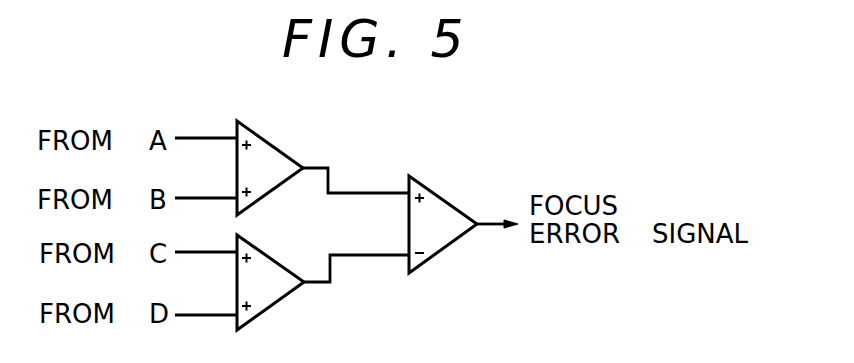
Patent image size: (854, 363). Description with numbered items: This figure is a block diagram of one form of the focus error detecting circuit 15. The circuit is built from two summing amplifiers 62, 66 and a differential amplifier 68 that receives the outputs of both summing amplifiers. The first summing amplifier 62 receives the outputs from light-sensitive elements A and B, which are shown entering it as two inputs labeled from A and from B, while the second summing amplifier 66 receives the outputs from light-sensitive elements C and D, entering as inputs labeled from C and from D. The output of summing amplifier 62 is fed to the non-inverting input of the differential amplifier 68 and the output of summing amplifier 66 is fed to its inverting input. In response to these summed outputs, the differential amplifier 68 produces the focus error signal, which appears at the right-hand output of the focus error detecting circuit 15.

The focus error detecting circuit 15 is at (410, 137).
The summing amplifier 62 is at (284, 153).
The summing amplifier 66 is at (278, 304).
The differential amplifier 68 is at (455, 212).